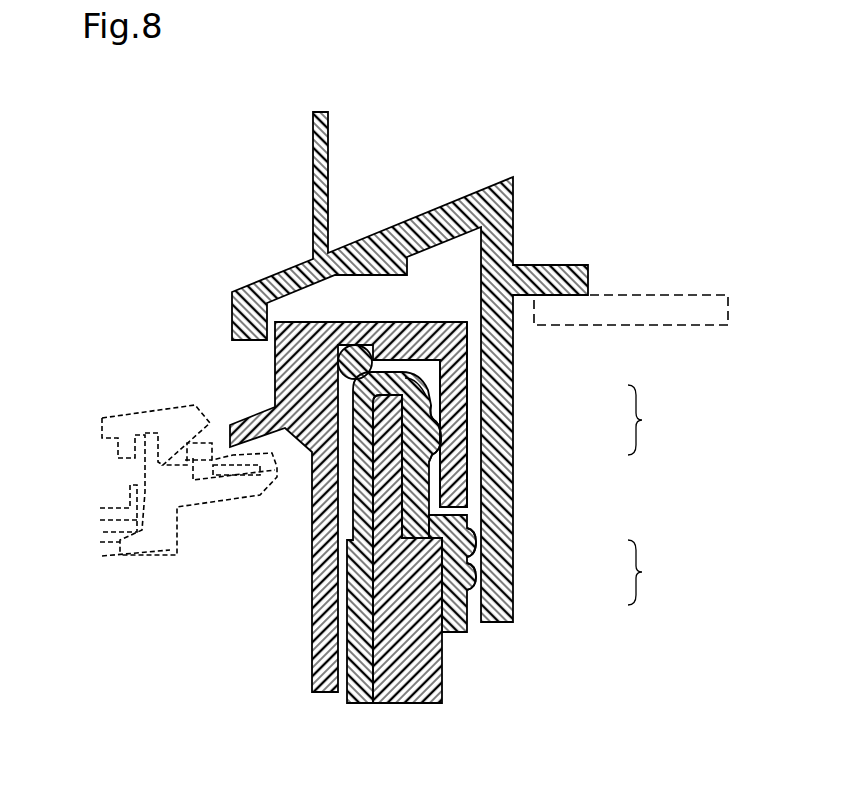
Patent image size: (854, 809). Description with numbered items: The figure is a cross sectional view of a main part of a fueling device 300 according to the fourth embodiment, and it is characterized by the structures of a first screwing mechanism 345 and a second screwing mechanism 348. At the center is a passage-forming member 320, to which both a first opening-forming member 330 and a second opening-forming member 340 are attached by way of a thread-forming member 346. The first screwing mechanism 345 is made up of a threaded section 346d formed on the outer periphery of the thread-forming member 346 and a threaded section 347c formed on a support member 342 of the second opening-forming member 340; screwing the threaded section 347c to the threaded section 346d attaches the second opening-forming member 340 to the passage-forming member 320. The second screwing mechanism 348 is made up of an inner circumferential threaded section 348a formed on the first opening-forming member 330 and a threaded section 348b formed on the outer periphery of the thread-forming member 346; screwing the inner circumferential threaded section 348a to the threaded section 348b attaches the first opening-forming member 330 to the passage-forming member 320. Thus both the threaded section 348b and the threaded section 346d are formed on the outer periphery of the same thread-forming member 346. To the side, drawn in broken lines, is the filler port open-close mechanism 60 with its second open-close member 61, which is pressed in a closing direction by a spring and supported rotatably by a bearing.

The fueling device 300 is at (486, 160).
The first opening-forming member 330 is at (513, 205).
The second opening-forming member 340 is at (273, 372).
The support member 342 is at (467, 345).
The passage-forming member 320 is at (384, 704).
The first screwing mechanism 345 is at (657, 420).
The threaded section 347c is at (438, 436).
The threaded section 346d is at (441, 448).
The second screwing mechanism 348 is at (657, 572).
The inner circumferential threaded section 348a is at (476, 550).
The threaded section 348b is at (476, 589).
The thread-forming member 346 is at (459, 635).
The second open-close member 61 is at (100, 429).
The filler port open-close mechanism 60 is at (149, 480).